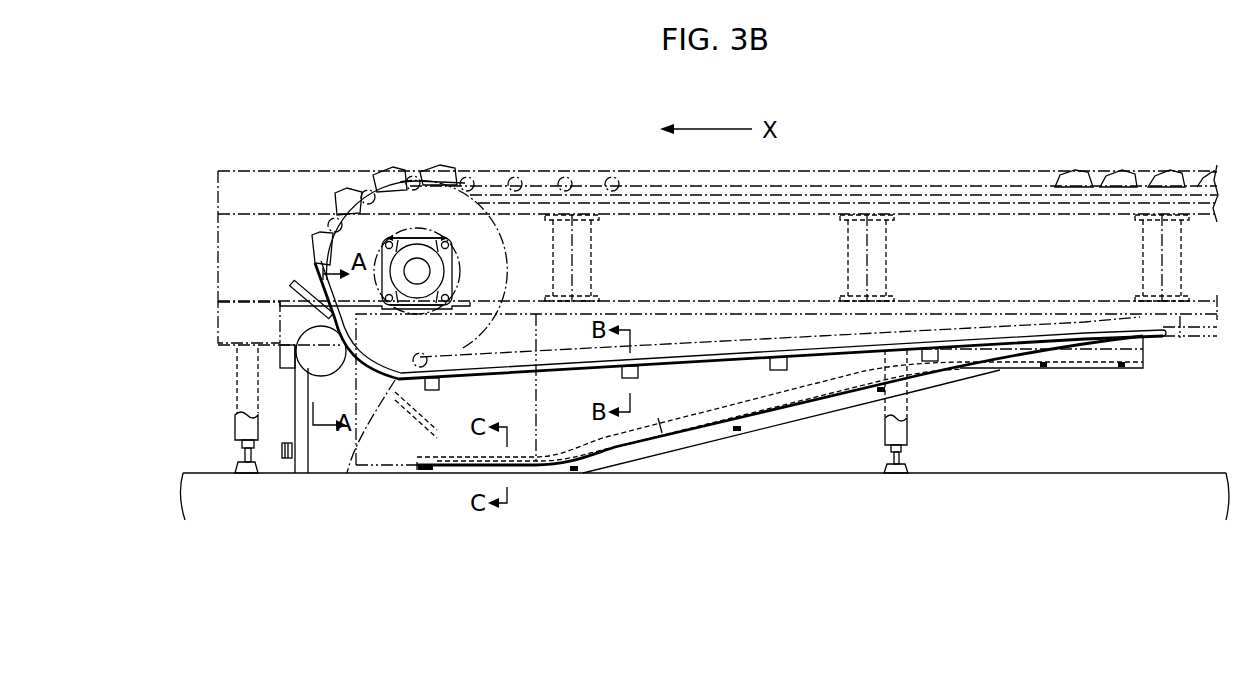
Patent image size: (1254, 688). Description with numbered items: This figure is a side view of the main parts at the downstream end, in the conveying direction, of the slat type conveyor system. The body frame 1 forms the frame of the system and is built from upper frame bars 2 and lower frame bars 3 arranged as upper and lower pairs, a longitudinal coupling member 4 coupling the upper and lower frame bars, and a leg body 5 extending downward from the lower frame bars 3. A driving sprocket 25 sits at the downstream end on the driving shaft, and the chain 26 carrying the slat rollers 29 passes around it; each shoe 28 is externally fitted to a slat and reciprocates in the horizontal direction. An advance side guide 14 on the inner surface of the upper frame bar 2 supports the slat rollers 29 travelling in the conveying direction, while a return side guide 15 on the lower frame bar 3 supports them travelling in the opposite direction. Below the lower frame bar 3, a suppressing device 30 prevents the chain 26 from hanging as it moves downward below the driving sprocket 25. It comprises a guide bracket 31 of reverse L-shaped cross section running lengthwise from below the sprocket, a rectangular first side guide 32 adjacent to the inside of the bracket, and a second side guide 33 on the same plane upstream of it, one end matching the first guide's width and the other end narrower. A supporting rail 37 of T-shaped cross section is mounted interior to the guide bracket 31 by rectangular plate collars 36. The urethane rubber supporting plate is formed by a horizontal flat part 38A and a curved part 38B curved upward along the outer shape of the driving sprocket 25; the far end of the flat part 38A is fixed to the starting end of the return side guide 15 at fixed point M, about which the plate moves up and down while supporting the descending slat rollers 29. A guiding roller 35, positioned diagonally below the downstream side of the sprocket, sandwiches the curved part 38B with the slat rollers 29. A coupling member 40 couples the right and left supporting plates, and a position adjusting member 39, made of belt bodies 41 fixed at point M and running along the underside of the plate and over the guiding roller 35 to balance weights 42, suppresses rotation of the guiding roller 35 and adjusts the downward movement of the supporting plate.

The body frame 1 is at (208, 229).
The upper frame bar 2 is at (250, 181).
The lower frame bar 3 is at (228, 313).
The longitudinal coupling member 4 is at (605, 256).
The leg body 5 is at (905, 432).
The advance side guide 14 is at (931, 191).
The return side guide 15 is at (1206, 358).
The driving sprocket 25 is at (493, 183).
The chain 26 is at (845, 185).
The shoe 28 is at (1127, 180).
The slat roller 29 is at (417, 170).
The suppressing device 30 is at (387, 436).
The guide bracket 31 is at (325, 465).
The first side guide 32 is at (404, 448).
The second side guide 33 is at (668, 448).
The guiding roller 35 is at (325, 367).
The rectangular plate collar 36 is at (592, 477).
The supporting rail 37 is at (538, 472).
The flat part 38A is at (540, 366).
The curved part 38B is at (288, 303).
The position adjusting member 39 is at (277, 463).
The coupling member 40 is at (440, 388).
The belt body 41 is at (295, 405).
The balance weight 42 is at (283, 452).
The fixed point M is at (1152, 341).